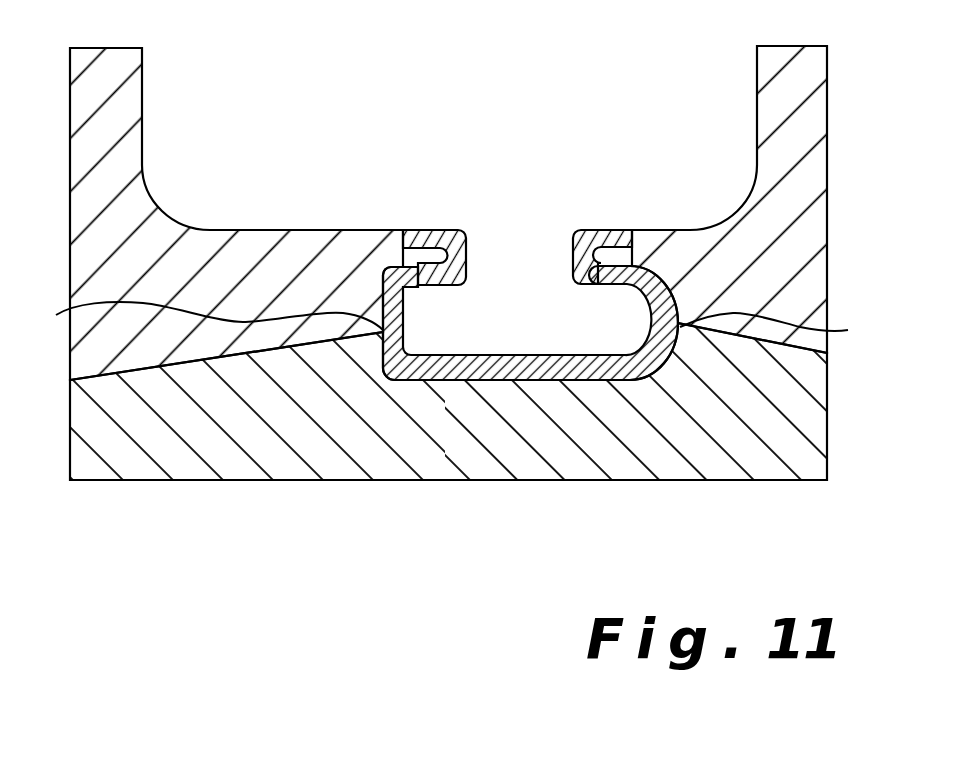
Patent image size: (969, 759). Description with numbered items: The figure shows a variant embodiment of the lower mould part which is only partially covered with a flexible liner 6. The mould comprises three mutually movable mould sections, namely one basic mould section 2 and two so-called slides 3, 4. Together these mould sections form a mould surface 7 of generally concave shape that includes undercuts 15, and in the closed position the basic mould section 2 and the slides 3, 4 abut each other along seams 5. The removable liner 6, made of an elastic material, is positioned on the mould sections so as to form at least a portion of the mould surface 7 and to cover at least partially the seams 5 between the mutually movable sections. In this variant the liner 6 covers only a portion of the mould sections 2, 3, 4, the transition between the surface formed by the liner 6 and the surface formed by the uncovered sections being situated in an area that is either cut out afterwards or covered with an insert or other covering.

The basic mould section 2 is at (547, 445).
The slide 3 is at (100, 293).
The slide 4 is at (798, 238).
The seams 5 is at (449, 320).
The flexible liner 6 is at (613, 243).
The mould surface 7 is at (325, 230).
The undercuts 15 is at (420, 283).